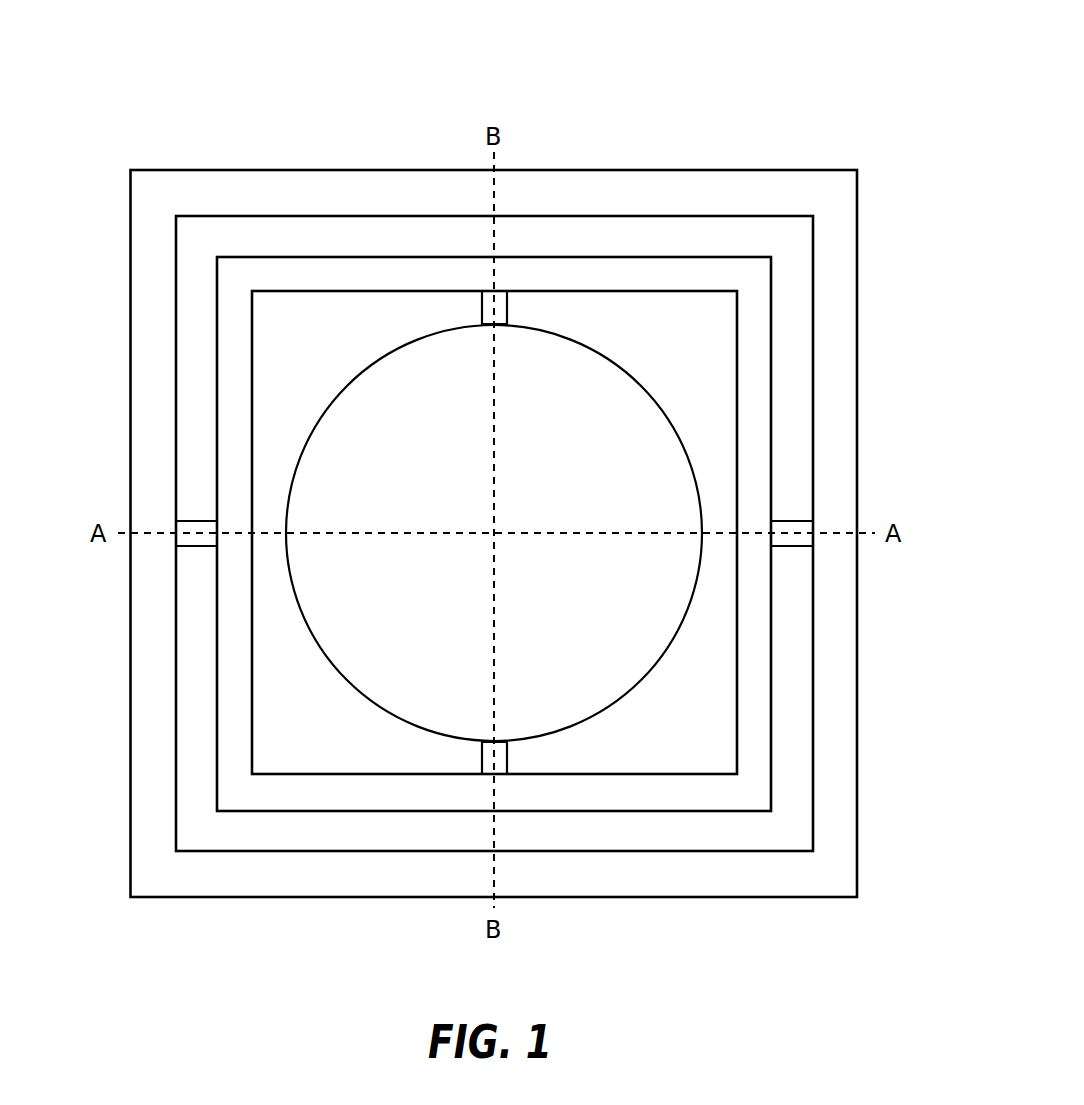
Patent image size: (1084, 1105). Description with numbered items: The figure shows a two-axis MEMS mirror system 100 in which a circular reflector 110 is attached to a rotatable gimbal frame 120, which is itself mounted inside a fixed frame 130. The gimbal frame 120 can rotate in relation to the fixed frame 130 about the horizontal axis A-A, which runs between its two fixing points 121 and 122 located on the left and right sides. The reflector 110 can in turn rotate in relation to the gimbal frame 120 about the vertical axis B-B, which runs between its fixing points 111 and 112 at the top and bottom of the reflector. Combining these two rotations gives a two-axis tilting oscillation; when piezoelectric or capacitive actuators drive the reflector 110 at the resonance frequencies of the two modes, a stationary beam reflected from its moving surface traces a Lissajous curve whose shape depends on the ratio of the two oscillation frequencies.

The MEMS mirror system 100 is at (633, 85).
The reflector 110 is at (638, 687).
The fixing point 111 is at (482, 311).
The fixing point 112 is at (508, 755).
The gimbal frame 120 is at (771, 811).
The fixing point 121 is at (193, 547).
The fixing point 122 is at (800, 547).
The fixed frame 130 is at (857, 170).